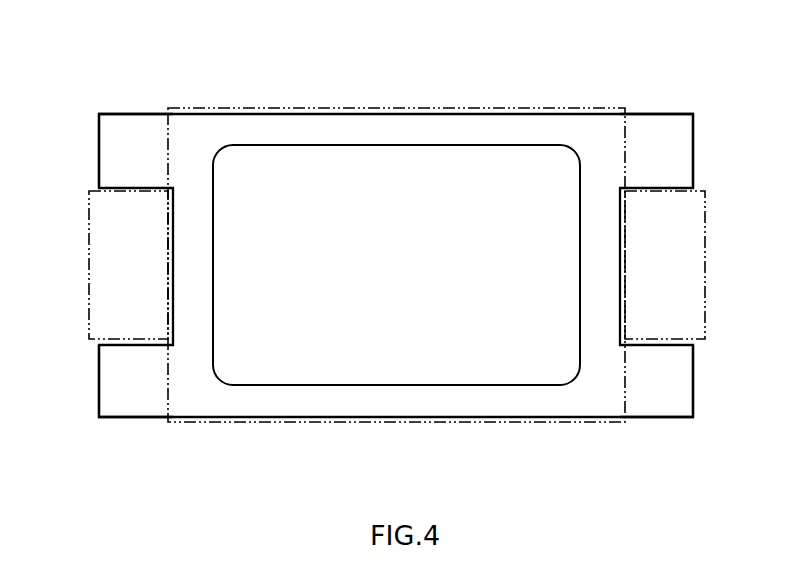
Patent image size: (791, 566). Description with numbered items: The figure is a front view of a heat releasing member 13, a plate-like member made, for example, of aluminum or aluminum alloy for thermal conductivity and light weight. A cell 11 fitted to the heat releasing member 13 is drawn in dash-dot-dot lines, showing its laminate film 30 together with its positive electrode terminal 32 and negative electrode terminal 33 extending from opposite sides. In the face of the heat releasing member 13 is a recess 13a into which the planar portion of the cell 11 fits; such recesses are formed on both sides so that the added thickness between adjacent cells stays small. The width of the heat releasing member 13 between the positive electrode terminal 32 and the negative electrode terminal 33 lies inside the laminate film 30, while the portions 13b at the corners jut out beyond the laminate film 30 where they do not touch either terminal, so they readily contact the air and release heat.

The cell 11 is at (507, 108).
The heat releasing member 13 is at (253, 110).
The recess 13a is at (373, 172).
The portions jutting out from the cells 13b is at (123, 113).
The laminate film 30 is at (400, 224).
The positive electrode terminal 32 is at (90, 192).
The negative electrode terminal 33 is at (702, 190).